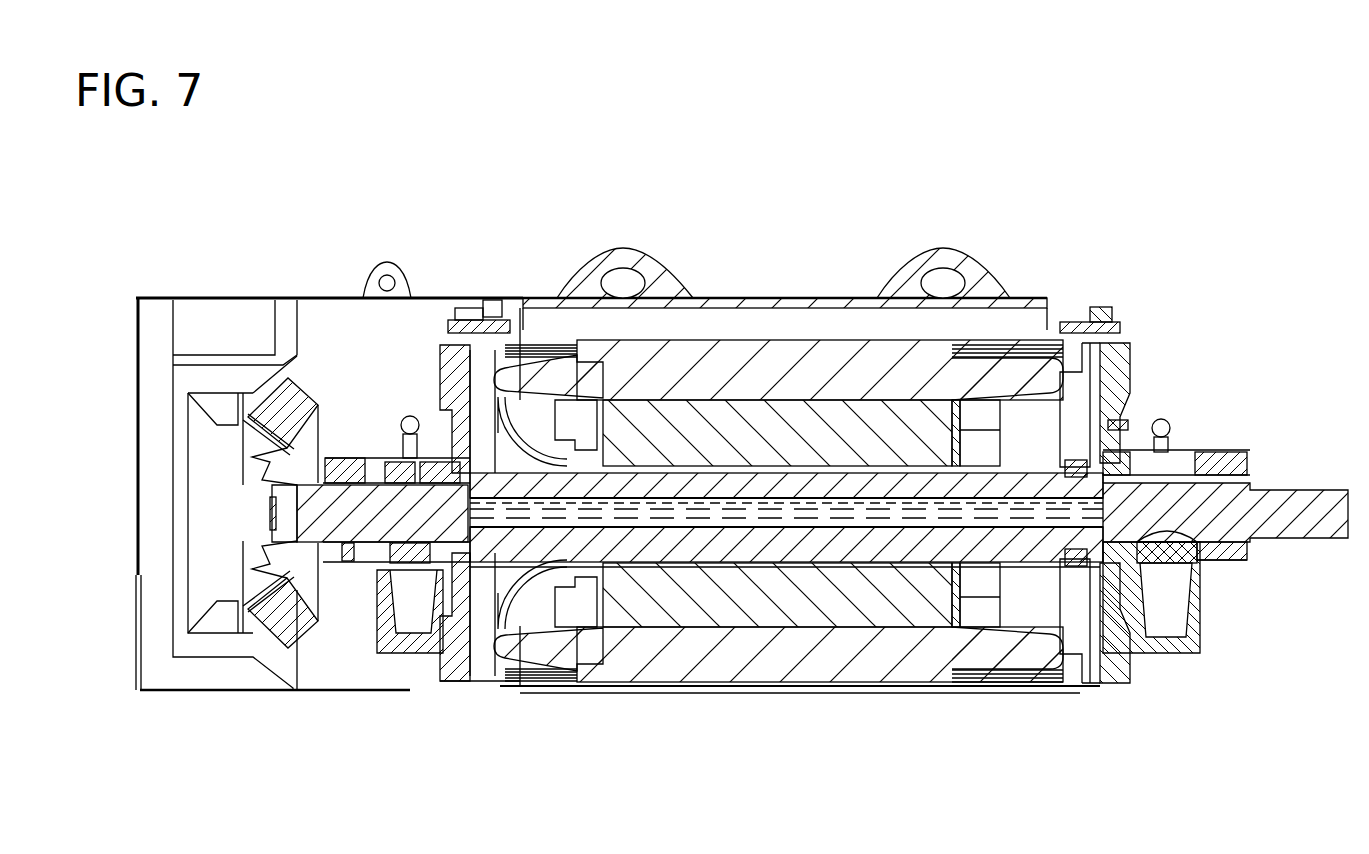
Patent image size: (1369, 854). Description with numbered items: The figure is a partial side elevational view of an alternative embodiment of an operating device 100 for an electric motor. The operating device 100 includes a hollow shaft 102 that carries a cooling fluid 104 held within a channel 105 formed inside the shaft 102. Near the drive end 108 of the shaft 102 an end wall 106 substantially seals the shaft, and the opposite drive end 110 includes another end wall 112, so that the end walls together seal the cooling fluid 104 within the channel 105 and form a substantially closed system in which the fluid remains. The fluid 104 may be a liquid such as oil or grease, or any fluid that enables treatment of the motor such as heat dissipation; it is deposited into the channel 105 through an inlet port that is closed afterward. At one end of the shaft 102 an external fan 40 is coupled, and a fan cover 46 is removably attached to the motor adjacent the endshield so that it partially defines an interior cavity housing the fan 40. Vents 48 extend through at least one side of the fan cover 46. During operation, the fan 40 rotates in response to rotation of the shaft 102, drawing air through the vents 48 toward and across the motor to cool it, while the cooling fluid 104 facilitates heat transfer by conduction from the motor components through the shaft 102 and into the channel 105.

The fan 40 is at (260, 480).
The fan cover 46 is at (262, 297).
The vents 48 is at (138, 575).
The operating device 100 is at (826, 462).
The shaft 102 is at (723, 472).
The cooling fluid 104 is at (723, 520).
The channel 105 is at (895, 514).
The end wall 106 is at (1103, 514).
The drive end 108 is at (1203, 567).
The opposite drive end 110 is at (273, 535).
The end wall 112 is at (273, 519).